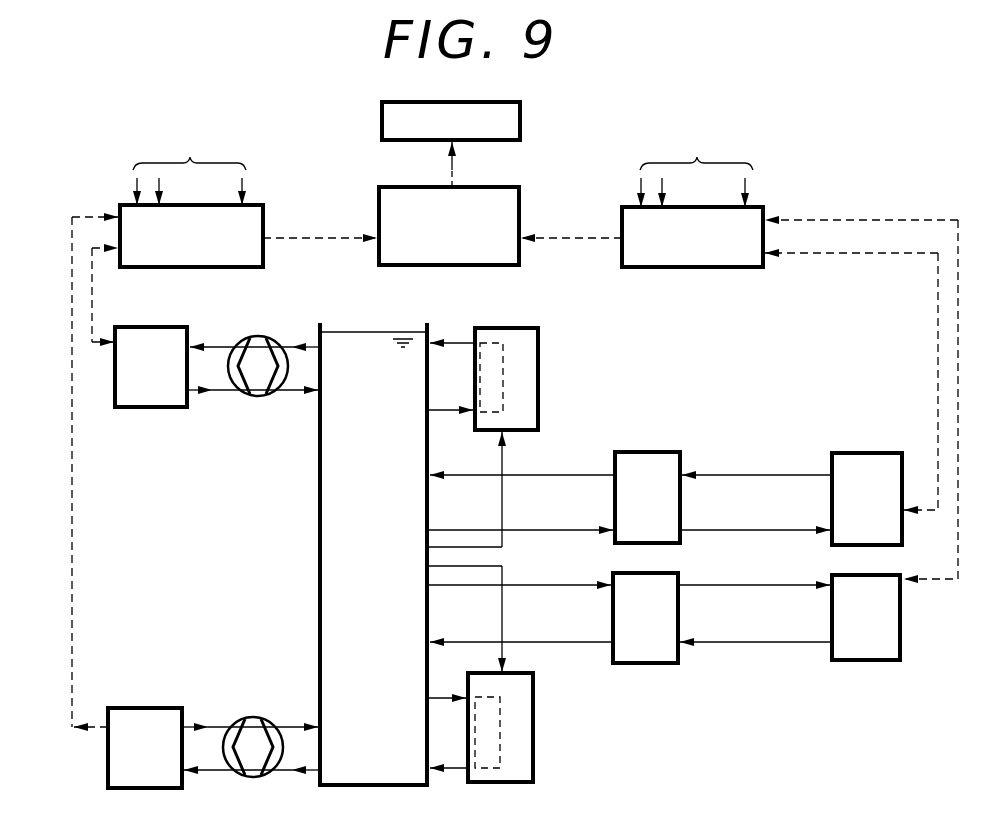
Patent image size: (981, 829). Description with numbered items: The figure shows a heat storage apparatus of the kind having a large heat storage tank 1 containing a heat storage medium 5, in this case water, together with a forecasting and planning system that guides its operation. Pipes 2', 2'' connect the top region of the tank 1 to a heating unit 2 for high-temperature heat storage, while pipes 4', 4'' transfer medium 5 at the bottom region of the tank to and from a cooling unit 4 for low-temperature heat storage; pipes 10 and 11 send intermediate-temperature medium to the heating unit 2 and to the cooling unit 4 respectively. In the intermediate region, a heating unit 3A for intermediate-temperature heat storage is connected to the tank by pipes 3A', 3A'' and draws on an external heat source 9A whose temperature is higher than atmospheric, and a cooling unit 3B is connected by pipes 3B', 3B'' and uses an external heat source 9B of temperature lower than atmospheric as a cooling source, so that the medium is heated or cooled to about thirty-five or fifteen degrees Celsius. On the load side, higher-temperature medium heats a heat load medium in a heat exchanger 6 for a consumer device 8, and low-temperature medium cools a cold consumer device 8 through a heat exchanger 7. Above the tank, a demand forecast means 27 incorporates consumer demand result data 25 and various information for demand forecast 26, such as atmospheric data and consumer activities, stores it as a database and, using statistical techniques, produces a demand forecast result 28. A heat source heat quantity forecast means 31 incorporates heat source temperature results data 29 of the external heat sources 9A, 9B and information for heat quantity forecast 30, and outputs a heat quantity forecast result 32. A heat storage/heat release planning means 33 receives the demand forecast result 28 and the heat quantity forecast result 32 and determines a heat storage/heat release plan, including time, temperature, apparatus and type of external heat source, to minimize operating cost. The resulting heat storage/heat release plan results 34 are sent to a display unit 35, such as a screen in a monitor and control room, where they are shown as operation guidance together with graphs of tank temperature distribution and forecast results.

The heat storage tank 1 is at (318, 553).
The heating unit for high-temperature heat storage 2 is at (530, 379).
The pipe 2' is at (450, 384).
The pipe 2'' is at (452, 314).
The heating unit for intermediate-temperature heat storage 3A is at (679, 472).
The pipe 3A' is at (628, 509).
The pipe 3A'' is at (631, 435).
The cooling unit for intermediate-temperature heat storage 3B is at (689, 646).
The pipe 3B' is at (628, 605).
The pipe 3B'' is at (631, 679).
The cooling unit for low-temperature heat storage 4 is at (525, 733).
The pipe 4' is at (422, 718).
The pipe 4'' is at (449, 798).
The heat storage medium 5 is at (358, 345).
The heat exchanger 6 is at (258, 396).
The heat exchanger 7 is at (254, 718).
The heat-load or consumer device 8 is at (165, 407).
The external heat source 9A is at (832, 453).
The external heat source 9B is at (900, 660).
The pipe 10 is at (503, 462).
The pipe 11 is at (500, 652).
The consumer demand result data 25 is at (95, 248).
The information for demand forecast 26 is at (189, 166).
The demand forecast means 27 is at (263, 205).
The demand forecast result 28 is at (344, 240).
The heat source temperature results data 29 is at (818, 253).
The information for heat quantity forecast 30 is at (696, 168).
The heat source heat quantity forecast means 31 is at (622, 215).
The heat quantity forecast result 32 is at (608, 241).
The heat storage/heat release planning means 33 is at (519, 205).
The heat storage/heat release plan results 34 is at (452, 158).
The display unit 35 is at (382, 118).